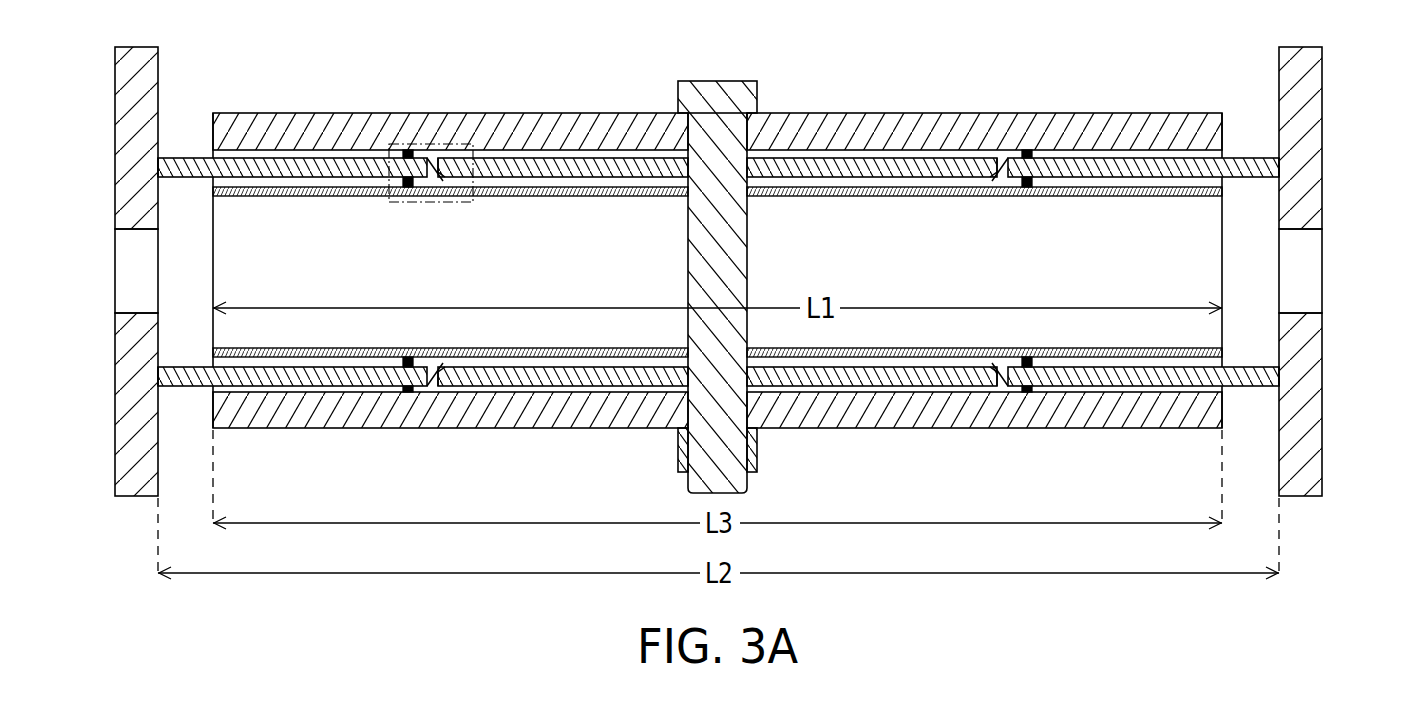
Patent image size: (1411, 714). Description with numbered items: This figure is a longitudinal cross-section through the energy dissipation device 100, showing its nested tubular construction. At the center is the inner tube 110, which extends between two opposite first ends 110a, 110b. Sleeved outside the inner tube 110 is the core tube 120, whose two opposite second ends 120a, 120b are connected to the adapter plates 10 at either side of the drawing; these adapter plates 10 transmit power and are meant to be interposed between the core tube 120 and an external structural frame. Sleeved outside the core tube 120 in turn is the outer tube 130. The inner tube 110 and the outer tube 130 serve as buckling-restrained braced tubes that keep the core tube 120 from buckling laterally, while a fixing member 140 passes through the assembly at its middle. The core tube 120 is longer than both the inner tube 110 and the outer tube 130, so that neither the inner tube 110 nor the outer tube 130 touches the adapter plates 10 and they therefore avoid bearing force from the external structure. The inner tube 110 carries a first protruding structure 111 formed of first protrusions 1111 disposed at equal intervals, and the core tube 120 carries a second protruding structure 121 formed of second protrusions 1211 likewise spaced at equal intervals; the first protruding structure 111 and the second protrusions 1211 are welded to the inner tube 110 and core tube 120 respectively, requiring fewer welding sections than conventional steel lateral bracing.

The adapter plate 10 is at (118, 95).
The energy dissipation device 100 is at (719, 318).
The inner tube 110 is at (721, 270).
The first end 110a is at (1226, 259).
The first end 110b is at (208, 259).
The first protruding structure 111 is at (717, 228).
The first protrusion 1111 is at (402, 153).
The core tube 120 is at (719, 225).
The second end 120a is at (1283, 377).
The second end 120b is at (154, 377).
The second protruding structure 121 is at (717, 225).
The second protrusion 1211 is at (432, 160).
The outer tube 130 is at (1180, 118).
The fixing member 140 is at (719, 82).